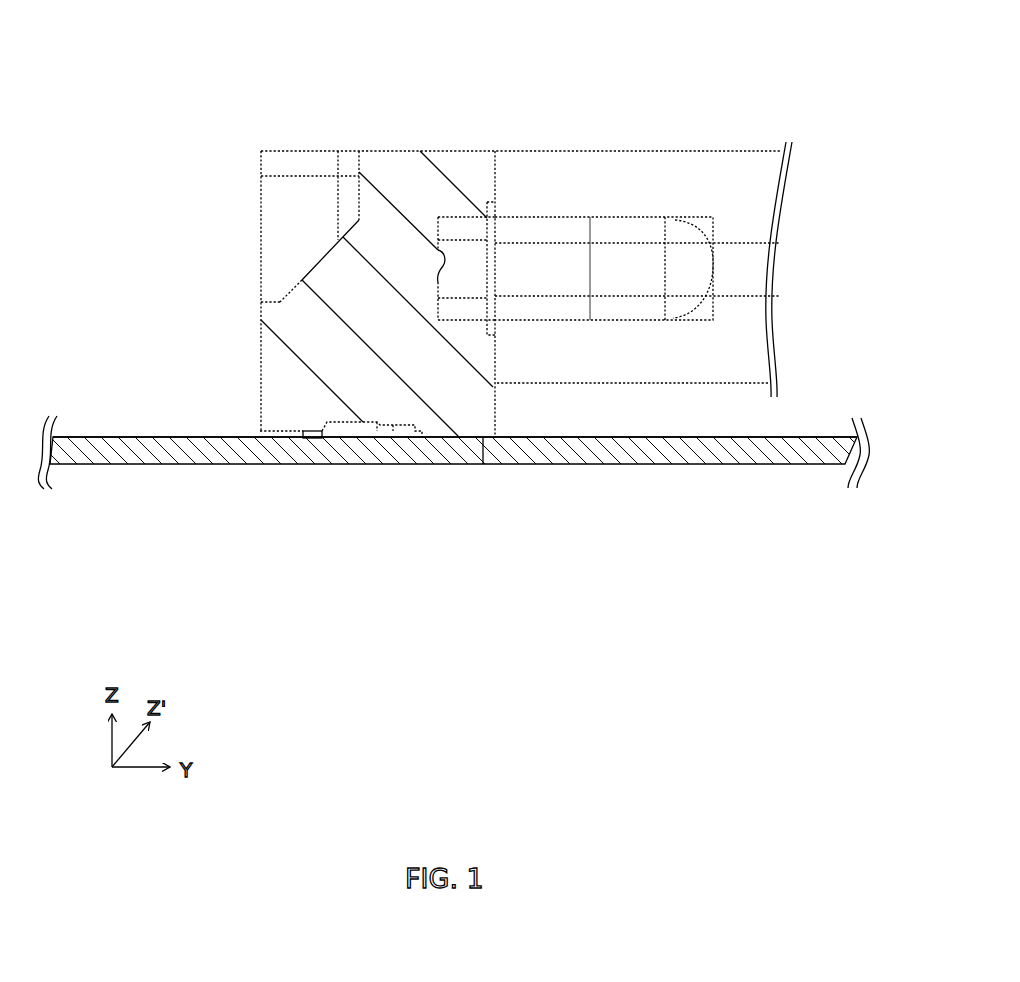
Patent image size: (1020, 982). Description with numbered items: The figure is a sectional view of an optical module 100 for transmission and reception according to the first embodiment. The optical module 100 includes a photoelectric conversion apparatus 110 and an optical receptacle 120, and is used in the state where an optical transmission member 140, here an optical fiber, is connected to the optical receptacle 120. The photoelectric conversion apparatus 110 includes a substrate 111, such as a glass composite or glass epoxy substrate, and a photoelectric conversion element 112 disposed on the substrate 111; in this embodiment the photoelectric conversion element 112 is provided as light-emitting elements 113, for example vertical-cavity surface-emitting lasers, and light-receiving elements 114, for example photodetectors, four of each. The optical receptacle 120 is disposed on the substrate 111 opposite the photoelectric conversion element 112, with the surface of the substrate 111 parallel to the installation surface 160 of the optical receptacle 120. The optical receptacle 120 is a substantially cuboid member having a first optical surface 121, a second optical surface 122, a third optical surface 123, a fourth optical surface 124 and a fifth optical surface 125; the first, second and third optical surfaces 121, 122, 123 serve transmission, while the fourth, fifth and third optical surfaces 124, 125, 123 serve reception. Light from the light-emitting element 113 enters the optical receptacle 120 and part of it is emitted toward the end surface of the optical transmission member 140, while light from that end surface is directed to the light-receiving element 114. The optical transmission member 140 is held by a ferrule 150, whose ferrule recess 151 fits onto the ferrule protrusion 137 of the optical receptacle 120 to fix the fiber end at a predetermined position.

The optical module 100 is at (188, 61).
The photoelectric conversion apparatus 110 is at (370, 601).
The substrate 111 is at (384, 452).
The photoelectric conversion element 112 is at (257, 548).
The light-emitting element 113 is at (262, 485).
The light-receiving element 114 is at (313, 439).
The optical receptacle 120 is at (310, 138).
The first optical surface 121 is at (273, 423).
The second optical surface 122 is at (518, 222).
The third optical surface 123 is at (295, 276).
The fourth optical surface 124 is at (445, 270).
The fifth optical surface 125 is at (297, 431).
The ferrule protrusion 137 is at (682, 226).
The optical transmission member 140 is at (762, 265).
The ferrule 150 is at (637, 357).
The ferrule recess 151 is at (653, 218).
The installation surface 160 is at (483, 465).